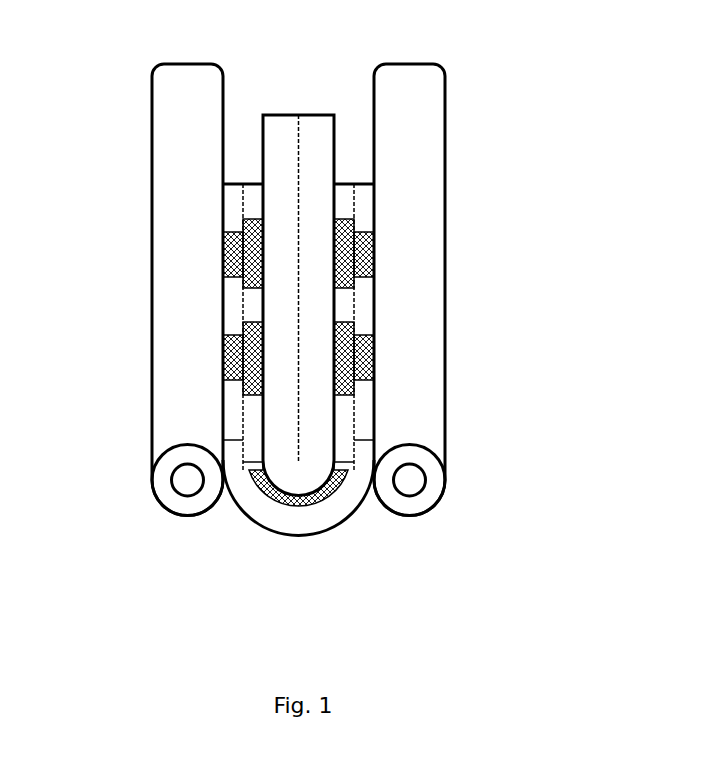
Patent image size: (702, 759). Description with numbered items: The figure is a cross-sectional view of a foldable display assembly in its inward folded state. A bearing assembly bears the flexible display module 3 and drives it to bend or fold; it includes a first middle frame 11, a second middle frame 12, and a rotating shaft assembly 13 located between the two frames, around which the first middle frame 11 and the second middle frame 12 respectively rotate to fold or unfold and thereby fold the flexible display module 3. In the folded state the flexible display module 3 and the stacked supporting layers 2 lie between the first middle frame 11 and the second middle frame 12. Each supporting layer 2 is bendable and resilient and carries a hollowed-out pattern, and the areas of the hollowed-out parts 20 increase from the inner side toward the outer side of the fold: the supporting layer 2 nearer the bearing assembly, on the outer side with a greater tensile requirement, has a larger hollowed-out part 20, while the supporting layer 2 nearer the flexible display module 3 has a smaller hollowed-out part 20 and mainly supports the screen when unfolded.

The supporting layer 2 is at (348, 197).
The flexible display module 3 is at (273, 138).
The first middle frame 11 is at (173, 364).
The second middle frame 12 is at (427, 361).
The rotating shaft assembly 13 is at (408, 495).
The hollowed-out part 20 is at (367, 292).